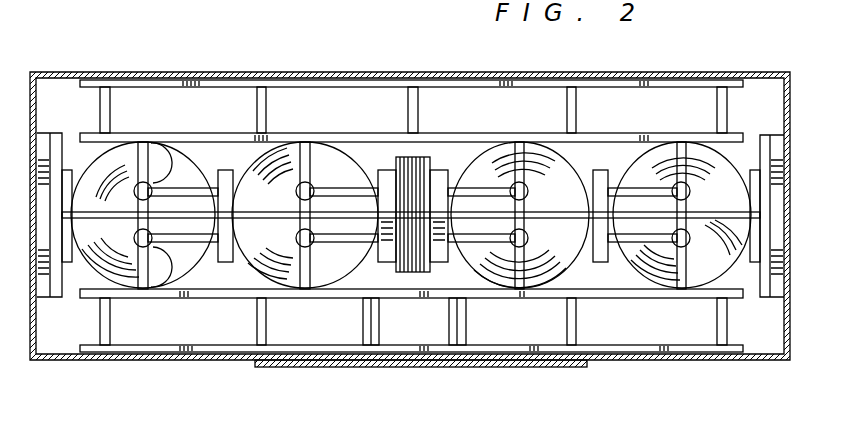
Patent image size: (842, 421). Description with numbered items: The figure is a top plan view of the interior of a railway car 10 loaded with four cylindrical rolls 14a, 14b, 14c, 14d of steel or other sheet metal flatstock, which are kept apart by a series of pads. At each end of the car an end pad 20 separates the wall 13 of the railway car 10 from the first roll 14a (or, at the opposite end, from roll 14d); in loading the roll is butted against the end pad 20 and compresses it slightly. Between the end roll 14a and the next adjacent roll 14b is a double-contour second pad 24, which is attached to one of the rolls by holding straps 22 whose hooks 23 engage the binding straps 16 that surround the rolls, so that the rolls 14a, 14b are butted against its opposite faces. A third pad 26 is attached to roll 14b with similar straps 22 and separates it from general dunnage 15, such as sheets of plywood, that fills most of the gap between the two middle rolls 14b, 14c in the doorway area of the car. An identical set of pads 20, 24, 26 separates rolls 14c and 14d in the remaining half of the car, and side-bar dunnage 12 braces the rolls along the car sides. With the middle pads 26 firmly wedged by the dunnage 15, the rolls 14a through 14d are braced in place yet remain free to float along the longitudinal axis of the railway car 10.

The railway car 10 is at (394, 57).
The side-bar dunnage 12 is at (178, 82).
The wall 13 is at (36, 100).
The roll 14a is at (128, 162).
The roll 14b is at (281, 170).
The roll 14c is at (492, 170).
The roll 14d is at (668, 168).
The dunnage 15 is at (412, 170).
The binding straps 16 is at (110, 207).
The end pad 20 is at (45, 304).
The straps 22 is at (181, 190).
The hooks 23 is at (150, 185).
The second pad 24 is at (230, 270).
The third pad 26 is at (389, 270).